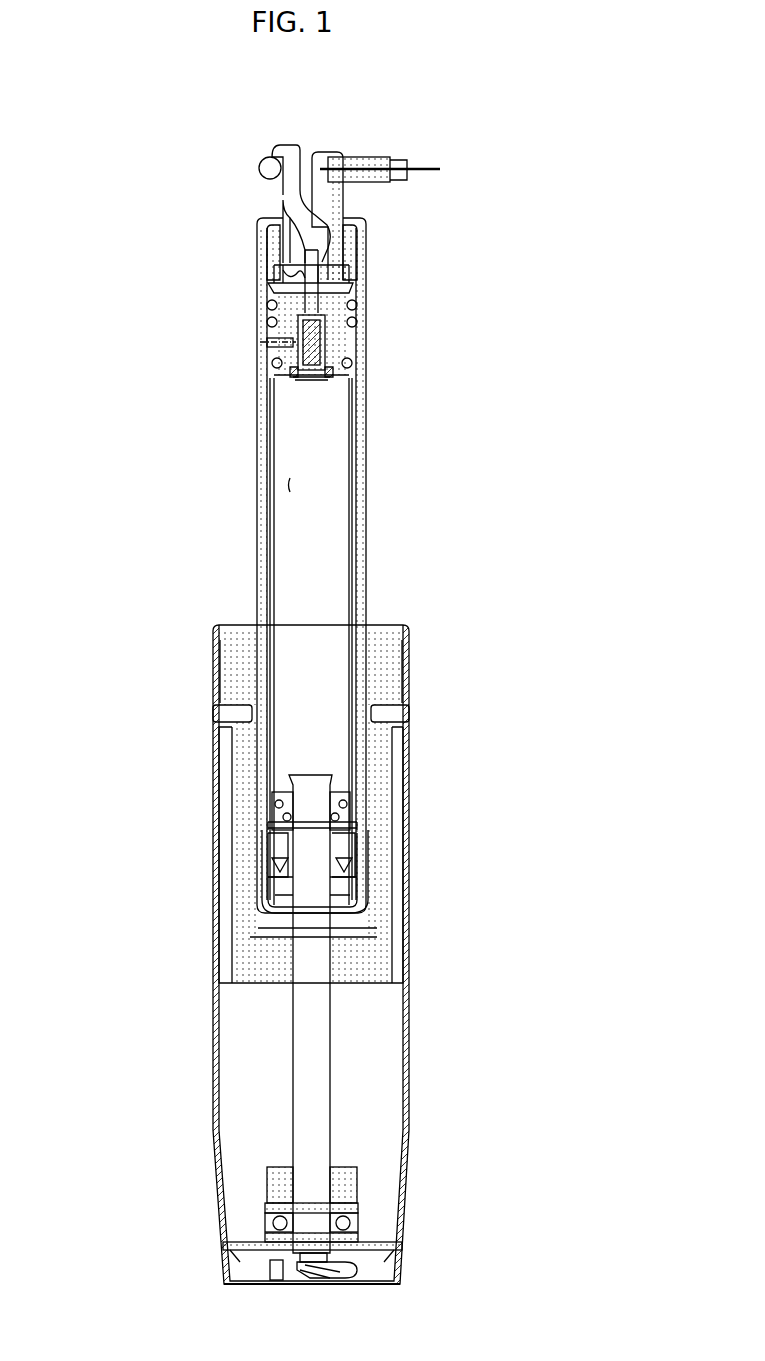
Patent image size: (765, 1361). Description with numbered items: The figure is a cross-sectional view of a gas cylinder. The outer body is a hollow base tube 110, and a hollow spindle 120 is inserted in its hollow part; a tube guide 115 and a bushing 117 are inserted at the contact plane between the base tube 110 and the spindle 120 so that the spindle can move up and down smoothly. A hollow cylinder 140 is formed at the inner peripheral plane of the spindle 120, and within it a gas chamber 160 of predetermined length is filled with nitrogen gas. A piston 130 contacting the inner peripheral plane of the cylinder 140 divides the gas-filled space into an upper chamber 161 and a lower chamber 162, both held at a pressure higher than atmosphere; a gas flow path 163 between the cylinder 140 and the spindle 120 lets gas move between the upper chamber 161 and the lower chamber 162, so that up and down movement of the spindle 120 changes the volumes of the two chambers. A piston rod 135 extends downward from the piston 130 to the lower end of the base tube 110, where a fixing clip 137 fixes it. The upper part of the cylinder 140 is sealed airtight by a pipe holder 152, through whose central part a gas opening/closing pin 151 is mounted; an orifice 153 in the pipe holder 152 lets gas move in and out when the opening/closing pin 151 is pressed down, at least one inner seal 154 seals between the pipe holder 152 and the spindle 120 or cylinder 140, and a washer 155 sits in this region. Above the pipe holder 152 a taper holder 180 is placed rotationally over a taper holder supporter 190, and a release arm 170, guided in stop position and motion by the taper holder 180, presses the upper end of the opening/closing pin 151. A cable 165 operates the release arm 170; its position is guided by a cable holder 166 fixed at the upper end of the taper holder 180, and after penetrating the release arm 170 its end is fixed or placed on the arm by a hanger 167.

The base tube 110 is at (408, 970).
The tube guide 115 is at (238, 640).
The bushing 117 is at (247, 874).
The spindle 120 is at (362, 520).
The piston 130 is at (345, 808).
The piston rod 135 is at (302, 1047).
The fixing clip 137 is at (355, 1270).
The cylinder 140 is at (352, 474).
The gas opening/closing pin 151 is at (312, 278).
The pipe holder 152 is at (343, 337).
The orifice 153 is at (265, 342).
The inner seal 154 is at (268, 318).
The washer 155 is at (352, 286).
The gas chamber 160 is at (123, 488).
The upper chamber 161 is at (290, 485).
The lower chamber 162 is at (275, 832).
The gas flow path 163 is at (355, 580).
The cable 165 is at (427, 168).
The cable holder 166 is at (366, 157).
The hanger 167 is at (300, 170).
The release arm 170 is at (280, 143).
The taper holder 180 is at (345, 202).
The taper holder supporter 190 is at (267, 243).